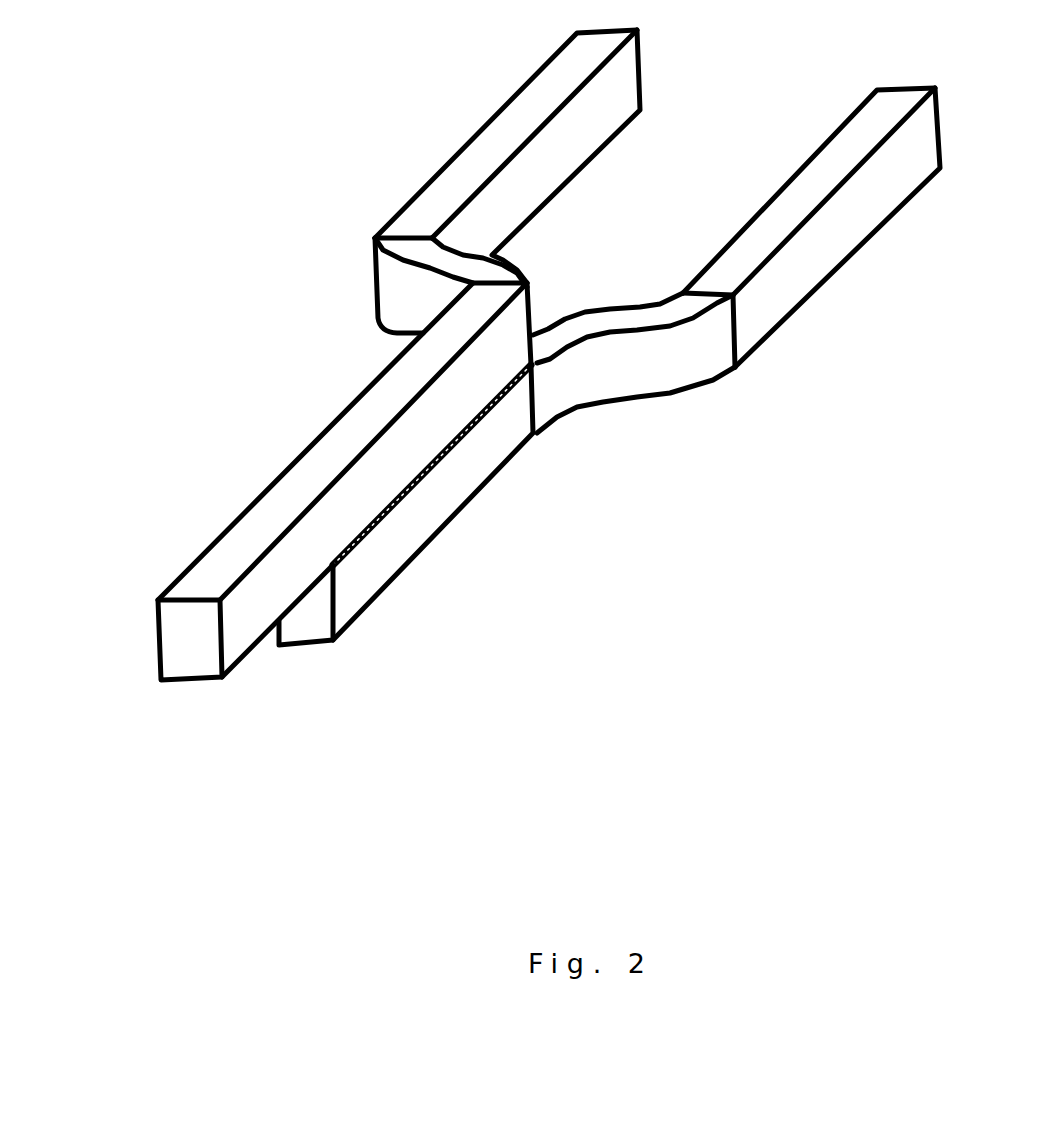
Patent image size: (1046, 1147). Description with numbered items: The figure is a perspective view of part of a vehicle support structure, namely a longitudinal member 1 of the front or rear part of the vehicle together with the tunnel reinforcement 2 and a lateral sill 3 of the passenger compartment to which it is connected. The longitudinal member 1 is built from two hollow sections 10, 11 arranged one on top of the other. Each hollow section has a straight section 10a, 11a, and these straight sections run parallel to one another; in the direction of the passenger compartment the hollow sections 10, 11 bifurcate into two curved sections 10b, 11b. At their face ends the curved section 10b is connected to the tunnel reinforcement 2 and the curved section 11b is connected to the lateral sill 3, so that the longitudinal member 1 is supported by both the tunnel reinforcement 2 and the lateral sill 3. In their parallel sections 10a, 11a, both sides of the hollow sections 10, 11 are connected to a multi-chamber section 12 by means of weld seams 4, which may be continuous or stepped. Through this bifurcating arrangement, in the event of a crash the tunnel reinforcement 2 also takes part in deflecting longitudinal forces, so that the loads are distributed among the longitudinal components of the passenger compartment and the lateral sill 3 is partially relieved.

The longitudinal member 1 is at (168, 708).
The tunnel reinforcement 2 is at (427, 180).
The lateral sill 3 is at (810, 302).
The weld seam 4 is at (348, 553).
The hollow section 10 is at (325, 459).
The straight section 10a is at (449, 510).
The curved section 10b is at (400, 293).
The hollow section 11 is at (531, 493).
The straight section 11a is at (473, 460).
The curved section 11b is at (677, 360).
The multi-chamber section 12 is at (573, 595).